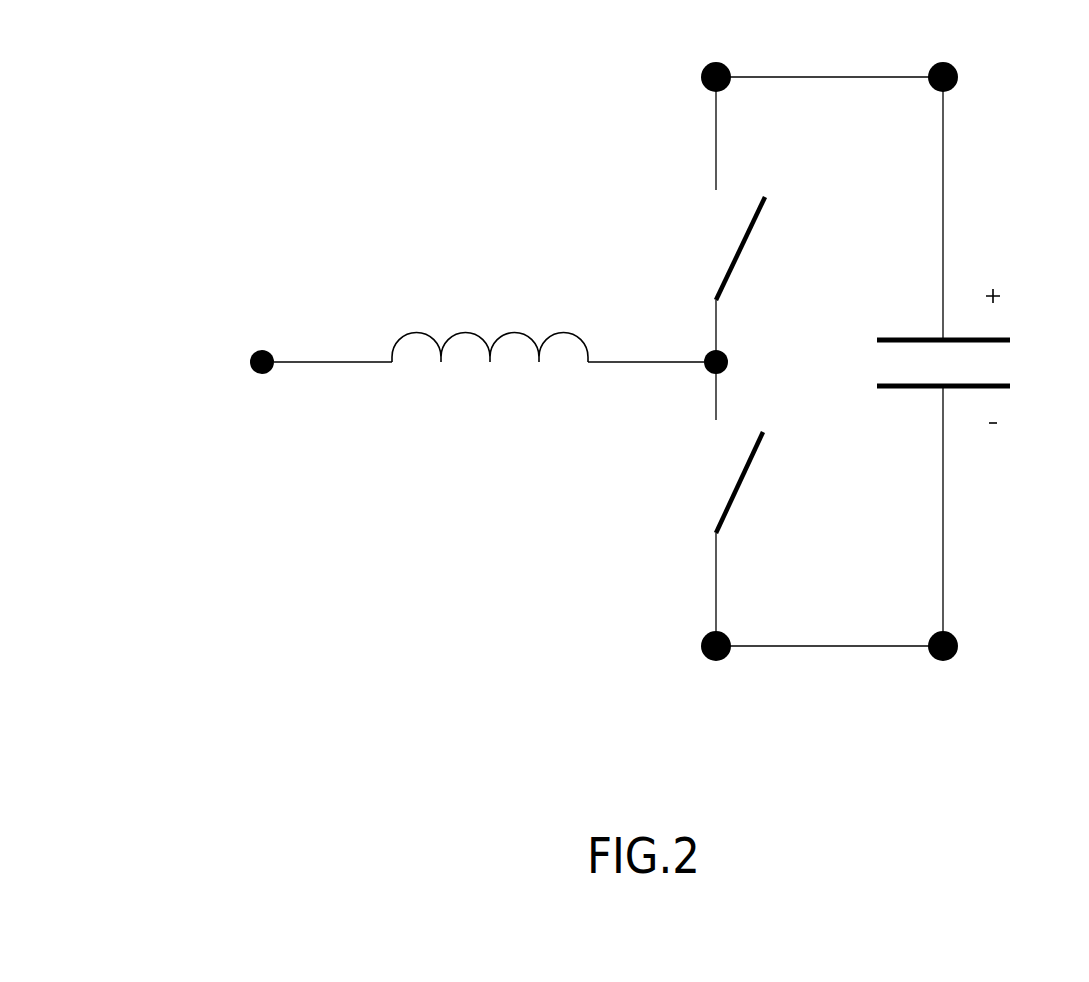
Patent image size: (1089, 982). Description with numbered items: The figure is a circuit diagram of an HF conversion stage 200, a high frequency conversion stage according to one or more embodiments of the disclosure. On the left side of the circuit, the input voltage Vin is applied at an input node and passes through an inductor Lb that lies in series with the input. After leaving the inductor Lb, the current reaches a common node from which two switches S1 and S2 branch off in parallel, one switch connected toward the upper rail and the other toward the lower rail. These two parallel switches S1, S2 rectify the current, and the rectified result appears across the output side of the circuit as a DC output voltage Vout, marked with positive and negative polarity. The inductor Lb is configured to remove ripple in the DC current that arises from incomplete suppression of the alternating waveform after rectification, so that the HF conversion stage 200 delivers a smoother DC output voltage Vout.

The HF conversion stage 200 is at (256, 88).
The input voltage Vin is at (249, 365).
The inductor Lb is at (490, 330).
The switch S1 is at (740, 248).
The switch S2 is at (740, 482).
The DC output voltage Vout is at (961, 356).